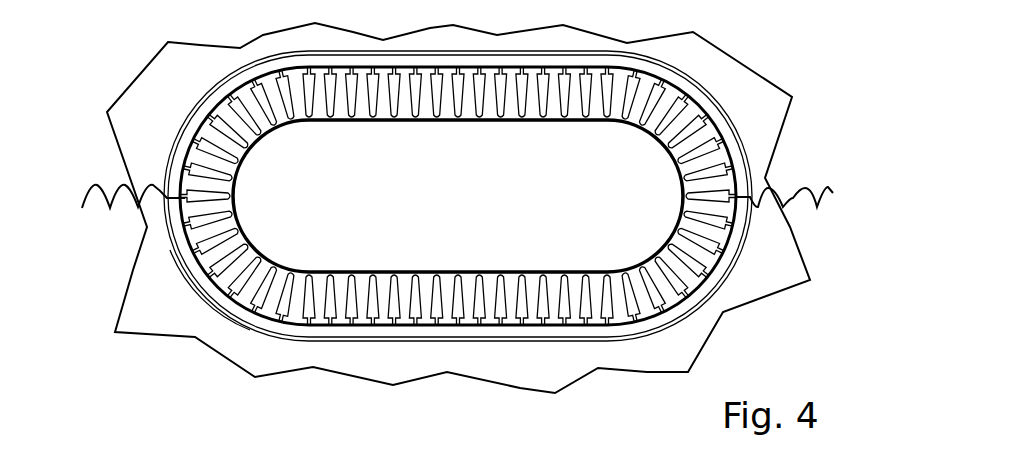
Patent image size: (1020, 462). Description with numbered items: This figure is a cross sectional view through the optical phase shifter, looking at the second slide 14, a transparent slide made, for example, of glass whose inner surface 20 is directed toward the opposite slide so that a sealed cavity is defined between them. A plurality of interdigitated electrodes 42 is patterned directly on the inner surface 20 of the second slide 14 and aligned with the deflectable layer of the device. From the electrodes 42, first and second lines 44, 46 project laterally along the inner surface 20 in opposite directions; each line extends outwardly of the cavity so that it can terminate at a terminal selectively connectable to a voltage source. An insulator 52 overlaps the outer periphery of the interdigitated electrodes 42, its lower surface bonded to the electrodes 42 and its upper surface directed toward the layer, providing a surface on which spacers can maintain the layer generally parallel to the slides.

The second slide 14 is at (799, 286).
The inner surface 20 is at (763, 110).
The interdigitated electrodes 42 is at (326, 100).
The first line 44 is at (90, 197).
The second line 46 is at (813, 183).
The insulator 52 is at (220, 308).